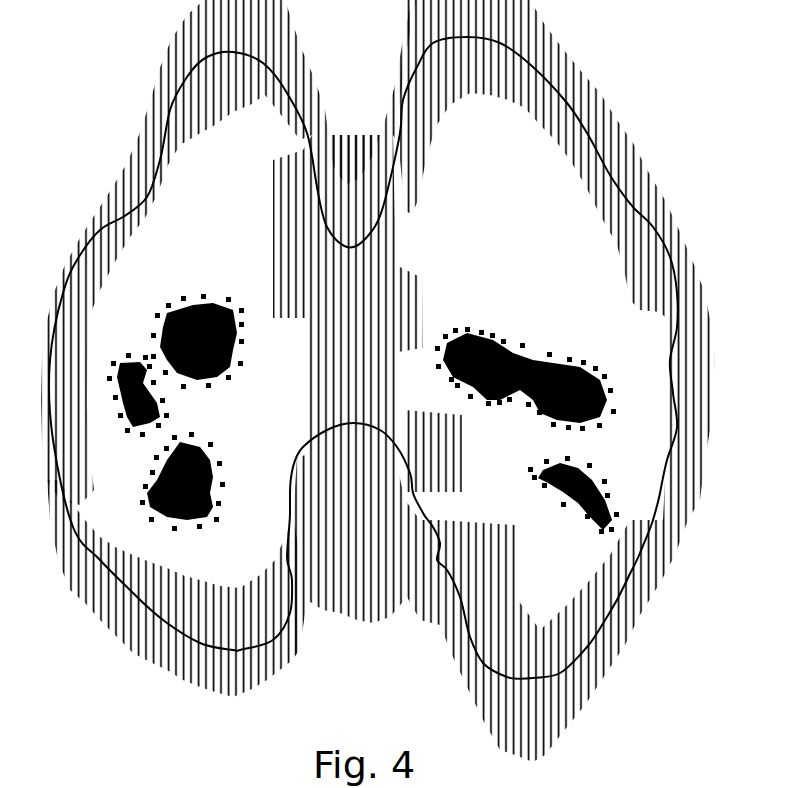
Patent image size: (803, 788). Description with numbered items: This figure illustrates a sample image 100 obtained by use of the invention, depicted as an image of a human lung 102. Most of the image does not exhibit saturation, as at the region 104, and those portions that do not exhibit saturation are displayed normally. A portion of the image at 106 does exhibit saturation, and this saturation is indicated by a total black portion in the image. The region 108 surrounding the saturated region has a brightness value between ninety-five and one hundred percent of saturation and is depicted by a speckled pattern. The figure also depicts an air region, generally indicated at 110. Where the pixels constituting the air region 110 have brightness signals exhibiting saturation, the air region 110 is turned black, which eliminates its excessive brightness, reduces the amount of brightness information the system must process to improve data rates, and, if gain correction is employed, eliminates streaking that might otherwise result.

The sample image 100 is at (443, 653).
The human lung 102 is at (613, 233).
The region not exhibiting saturation 104 is at (563, 600).
The saturated portion of the image 106 is at (600, 473).
The region surrounding the saturated region 108 is at (583, 516).
The air region 110 is at (630, 764).